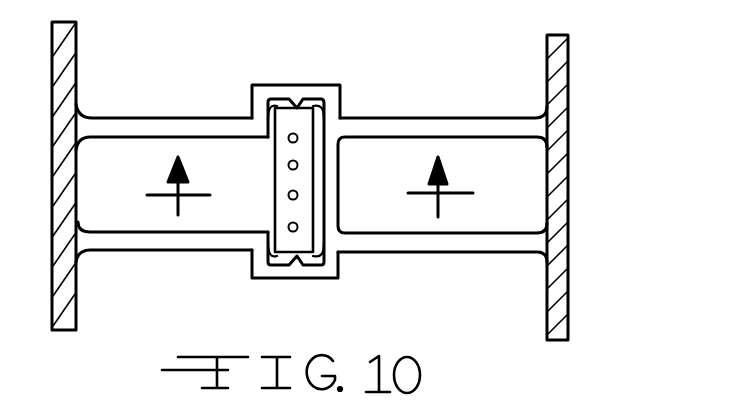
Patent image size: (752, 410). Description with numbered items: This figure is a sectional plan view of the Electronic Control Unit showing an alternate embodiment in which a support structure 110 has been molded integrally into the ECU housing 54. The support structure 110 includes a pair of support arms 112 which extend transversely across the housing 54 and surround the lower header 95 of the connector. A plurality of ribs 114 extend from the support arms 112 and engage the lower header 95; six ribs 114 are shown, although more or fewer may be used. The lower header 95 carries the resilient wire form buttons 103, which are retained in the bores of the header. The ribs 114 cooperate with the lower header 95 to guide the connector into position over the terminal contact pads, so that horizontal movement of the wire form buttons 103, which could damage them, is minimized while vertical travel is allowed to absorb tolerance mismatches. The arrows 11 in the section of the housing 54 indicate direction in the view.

The support structure 110 is at (341, 141).
The support arms 112 is at (137, 127).
The ribs 114 is at (300, 95).
The lower header 95 is at (287, 211).
The wire form button 103 is at (289, 141).
The fluid flow direction arrows 11 is at (312, 186).
The ECU housing 54 is at (560, 72).